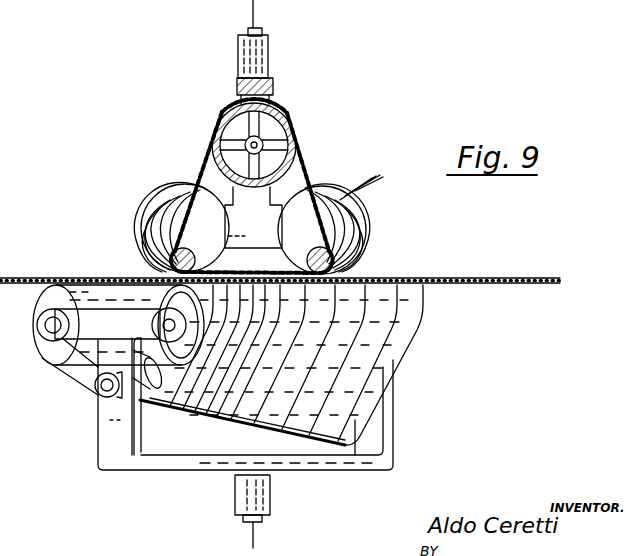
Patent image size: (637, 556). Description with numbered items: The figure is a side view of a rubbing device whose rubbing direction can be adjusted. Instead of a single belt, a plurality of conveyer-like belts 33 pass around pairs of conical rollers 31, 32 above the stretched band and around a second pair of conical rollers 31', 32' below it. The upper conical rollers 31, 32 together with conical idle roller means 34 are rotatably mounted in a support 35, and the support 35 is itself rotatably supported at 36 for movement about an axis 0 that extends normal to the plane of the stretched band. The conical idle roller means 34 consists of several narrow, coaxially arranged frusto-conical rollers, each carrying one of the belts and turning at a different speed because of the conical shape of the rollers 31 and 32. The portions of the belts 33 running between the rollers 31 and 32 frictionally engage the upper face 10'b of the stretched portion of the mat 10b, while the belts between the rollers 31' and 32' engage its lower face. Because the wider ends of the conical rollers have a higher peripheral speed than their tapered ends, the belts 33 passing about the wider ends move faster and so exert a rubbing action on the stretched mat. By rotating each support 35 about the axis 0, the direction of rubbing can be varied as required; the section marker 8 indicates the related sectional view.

The axis 0 is at (252, 14).
The rotatable support mounting 36 is at (268, 62).
The conical idle roller means 34 is at (288, 130).
The support 35 is at (282, 220).
The conical roller 32 is at (178, 204).
The conical roller 31 is at (332, 204).
The belts 33 is at (368, 194).
The mat 10b is at (433, 276).
The upper face 10'b is at (545, 256).
The section line 8- 8 is at (115, 228).
The conical roller 32' is at (100, 351).
The conical roller 31' is at (129, 317).